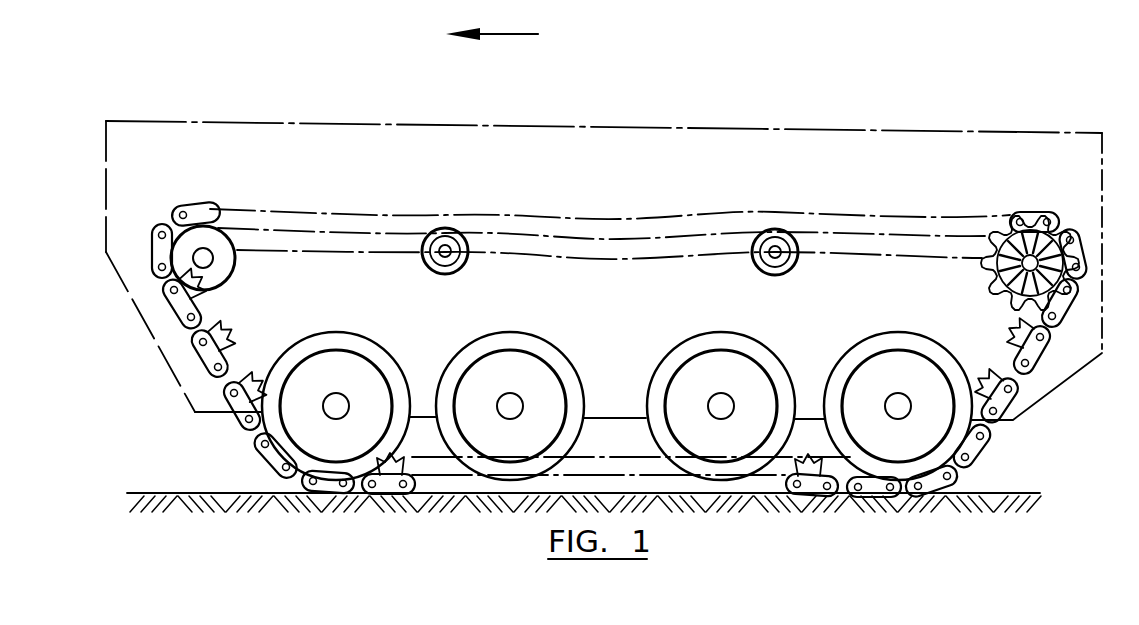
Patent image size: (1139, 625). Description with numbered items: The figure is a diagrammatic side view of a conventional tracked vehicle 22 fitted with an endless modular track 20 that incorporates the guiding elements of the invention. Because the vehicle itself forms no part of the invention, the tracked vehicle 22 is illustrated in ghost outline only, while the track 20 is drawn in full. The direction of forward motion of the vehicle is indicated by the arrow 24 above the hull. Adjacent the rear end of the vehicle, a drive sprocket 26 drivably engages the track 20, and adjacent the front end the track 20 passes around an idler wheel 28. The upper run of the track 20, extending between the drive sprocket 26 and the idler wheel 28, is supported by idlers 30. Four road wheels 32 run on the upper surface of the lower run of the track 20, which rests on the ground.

The track 20 is at (990, 459).
The tracked vehicle 22 is at (284, 160).
The arrow 24 is at (501, 35).
The drive sprocket 26 is at (970, 286).
The idler wheel 28 is at (226, 262).
The idlers 30 is at (461, 268).
The road wheels 32 is at (459, 339).